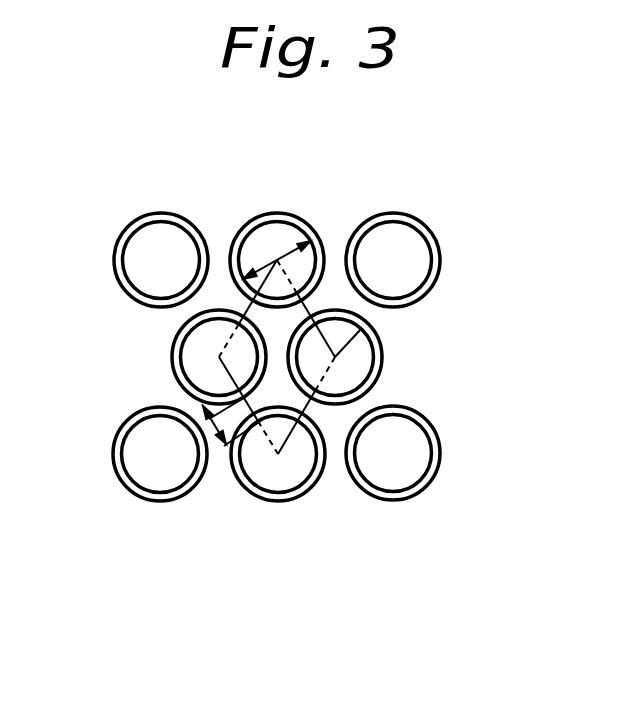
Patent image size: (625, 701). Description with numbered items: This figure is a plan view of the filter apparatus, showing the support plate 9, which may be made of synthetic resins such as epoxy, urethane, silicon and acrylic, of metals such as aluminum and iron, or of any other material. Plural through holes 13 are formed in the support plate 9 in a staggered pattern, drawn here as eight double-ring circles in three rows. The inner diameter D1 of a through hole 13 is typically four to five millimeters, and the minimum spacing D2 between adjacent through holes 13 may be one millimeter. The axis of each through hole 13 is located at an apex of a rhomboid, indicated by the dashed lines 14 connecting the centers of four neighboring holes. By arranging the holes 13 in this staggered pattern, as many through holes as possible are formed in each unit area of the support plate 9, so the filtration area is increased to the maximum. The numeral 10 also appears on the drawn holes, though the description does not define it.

The support plate 9 is at (123, 342).
The heat transfer tube 10 is at (122, 236).
The through holes 13 is at (237, 233).
The dashed lines 14 is at (366, 326).
The inner diameter D1 is at (288, 244).
The minimum spacing D2 is at (212, 425).